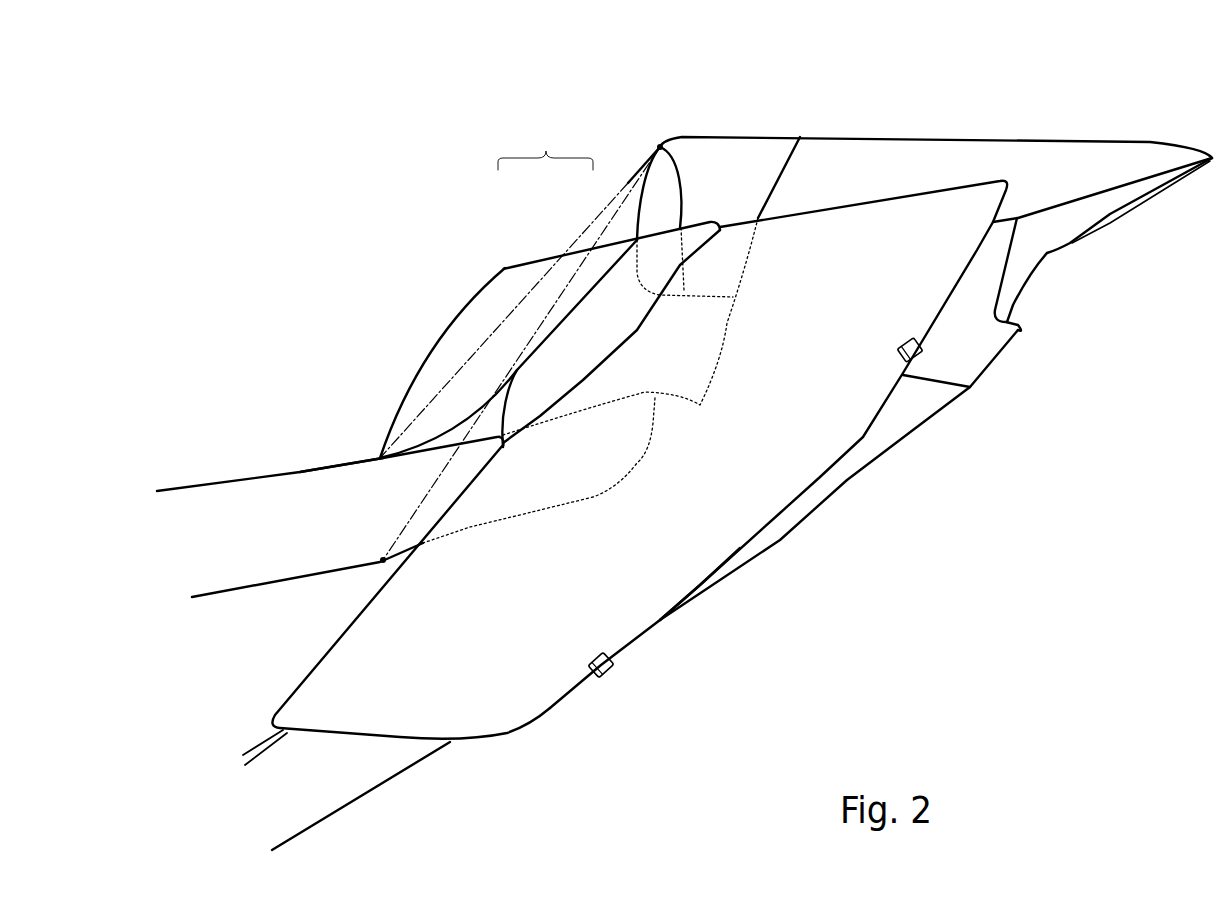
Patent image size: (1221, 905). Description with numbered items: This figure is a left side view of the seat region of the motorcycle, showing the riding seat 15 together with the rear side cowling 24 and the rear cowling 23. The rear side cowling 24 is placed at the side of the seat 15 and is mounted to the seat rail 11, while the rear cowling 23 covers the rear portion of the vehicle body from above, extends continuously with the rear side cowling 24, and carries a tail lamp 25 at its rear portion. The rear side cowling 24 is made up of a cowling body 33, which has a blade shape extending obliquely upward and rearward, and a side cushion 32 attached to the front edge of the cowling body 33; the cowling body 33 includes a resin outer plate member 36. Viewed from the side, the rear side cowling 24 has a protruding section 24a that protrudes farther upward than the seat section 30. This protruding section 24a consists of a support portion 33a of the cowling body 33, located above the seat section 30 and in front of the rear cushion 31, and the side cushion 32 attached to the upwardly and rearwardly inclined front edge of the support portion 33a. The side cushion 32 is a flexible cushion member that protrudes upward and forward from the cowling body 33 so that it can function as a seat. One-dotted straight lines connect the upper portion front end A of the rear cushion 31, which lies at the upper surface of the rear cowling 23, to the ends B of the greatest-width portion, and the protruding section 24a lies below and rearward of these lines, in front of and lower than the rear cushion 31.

The seat rail 11 is at (295, 660).
The riding seat 15 is at (347, 452).
The rear cowling 23 is at (897, 135).
The rear side cowling 24 is at (418, 342).
The protruding section 24a is at (545, 145).
The tail lamp 25 is at (1053, 257).
The seat section 30 is at (268, 476).
The rear cushion 31 is at (643, 168).
The side cushion 32 is at (513, 270).
The cowling body 33 is at (657, 627).
The support portion 33a is at (545, 320).
The outer plate member 36 is at (698, 557).
The upper portion front end of the rear cushion A is at (661, 145).
The end of the greatest-width portion B is at (380, 560).